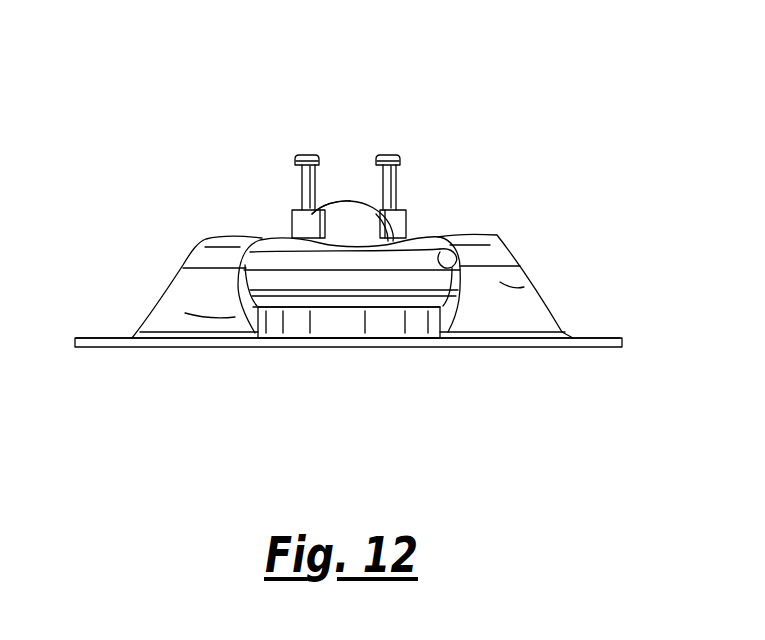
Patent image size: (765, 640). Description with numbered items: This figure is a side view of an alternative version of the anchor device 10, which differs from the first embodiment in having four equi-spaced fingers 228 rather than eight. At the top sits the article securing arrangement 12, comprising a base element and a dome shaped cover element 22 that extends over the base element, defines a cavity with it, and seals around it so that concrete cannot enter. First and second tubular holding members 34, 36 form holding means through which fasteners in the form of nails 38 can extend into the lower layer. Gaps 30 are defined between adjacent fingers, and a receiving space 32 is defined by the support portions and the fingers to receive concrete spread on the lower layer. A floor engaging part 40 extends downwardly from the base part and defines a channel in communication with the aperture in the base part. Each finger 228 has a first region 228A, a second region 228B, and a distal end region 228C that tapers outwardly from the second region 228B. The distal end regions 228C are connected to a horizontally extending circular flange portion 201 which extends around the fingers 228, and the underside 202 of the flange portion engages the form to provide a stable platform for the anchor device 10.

The anchor device 10 is at (290, 126).
The article securing arrangement 12 is at (349, 188).
The cover element 22 is at (330, 209).
The gaps 30 is at (456, 262).
The receiving space 32 is at (282, 258).
The first tubular holding member 34 is at (290, 222).
The second tubular holding member 36 is at (408, 220).
The nails 38 is at (302, 183).
The floor engaging part 40 is at (288, 318).
The flange portion 201 is at (94, 322).
The underside 202 is at (94, 349).
The fingers 228 is at (518, 266).
The cover top wall 228A is at (235, 237).
The second region 228B is at (187, 282).
The distal end regions 228C is at (537, 323).